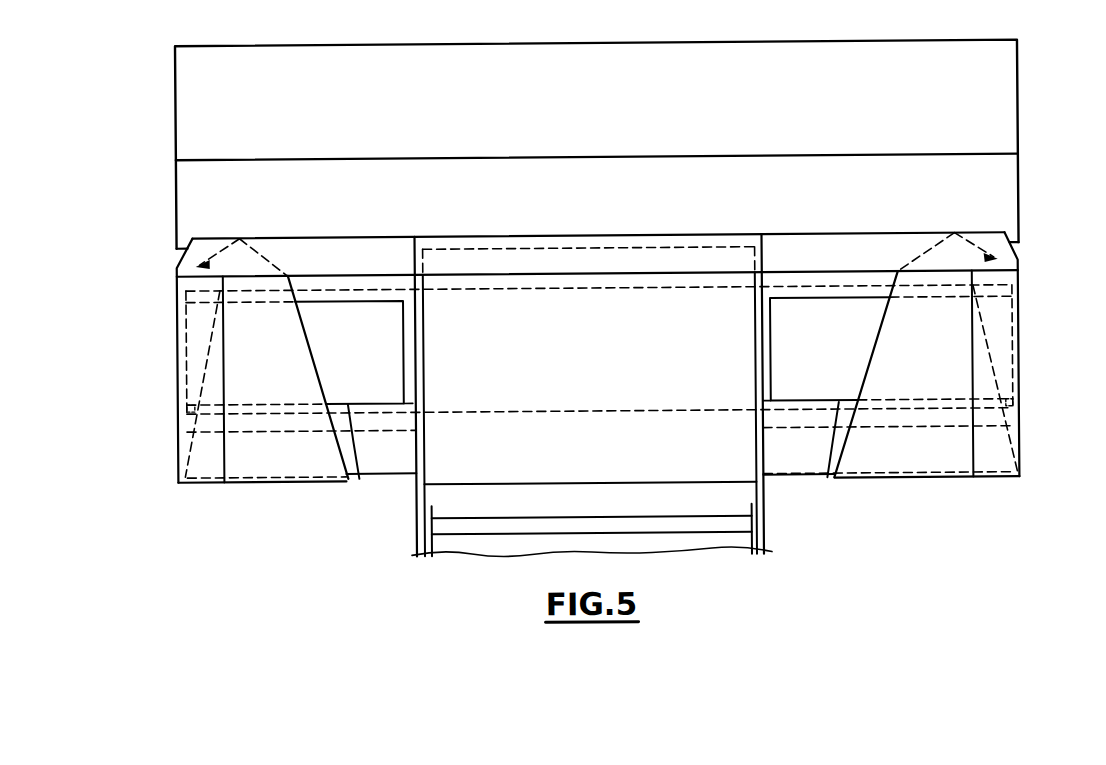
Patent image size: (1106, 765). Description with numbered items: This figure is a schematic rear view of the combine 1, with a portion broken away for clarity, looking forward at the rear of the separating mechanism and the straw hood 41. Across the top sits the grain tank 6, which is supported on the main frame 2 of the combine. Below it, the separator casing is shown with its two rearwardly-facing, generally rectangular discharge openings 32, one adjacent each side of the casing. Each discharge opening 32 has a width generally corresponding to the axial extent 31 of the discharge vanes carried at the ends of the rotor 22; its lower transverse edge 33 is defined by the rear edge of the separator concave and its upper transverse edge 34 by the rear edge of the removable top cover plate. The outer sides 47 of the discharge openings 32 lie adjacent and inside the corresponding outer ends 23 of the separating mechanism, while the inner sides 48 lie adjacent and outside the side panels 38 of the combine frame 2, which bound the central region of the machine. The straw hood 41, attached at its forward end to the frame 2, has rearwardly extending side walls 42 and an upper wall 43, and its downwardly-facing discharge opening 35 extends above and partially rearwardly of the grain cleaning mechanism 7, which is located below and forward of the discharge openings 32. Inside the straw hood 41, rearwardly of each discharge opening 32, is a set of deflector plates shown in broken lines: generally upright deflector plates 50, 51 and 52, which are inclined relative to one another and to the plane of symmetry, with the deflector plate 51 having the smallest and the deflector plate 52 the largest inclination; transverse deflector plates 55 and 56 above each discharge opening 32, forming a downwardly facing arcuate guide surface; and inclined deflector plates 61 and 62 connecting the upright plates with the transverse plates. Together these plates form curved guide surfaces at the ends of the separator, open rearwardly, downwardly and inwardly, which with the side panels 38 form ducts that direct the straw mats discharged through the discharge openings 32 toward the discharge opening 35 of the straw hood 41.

The combine 1 is at (1037, 183).
The main frame 2 is at (415, 492).
The grain tank 6 is at (1019, 118).
The grain cleaning mechanism 7 is at (719, 542).
The rotor 22 is at (516, 411).
The outer ends of the separating mechanism 23 is at (185, 356).
The axial extent of the vanes 31 is at (373, 410).
The discharge openings 32 is at (343, 299).
The lower transverse edge 33 is at (357, 478).
The upper transverse edge 34 is at (317, 299).
The discharge opening of the straw hood 35 is at (307, 480).
The side panels 38 is at (415, 537).
The straw hood 41 is at (235, 484).
The side walls 42 is at (178, 405).
The upper wall 43 is at (272, 236).
The outer sides of the discharge openings 47 is at (185, 338).
The inner sides of the discharge openings 48 is at (403, 361).
The deflector plate 50 is at (178, 388).
The deflector plate 51 is at (193, 318).
The deflector plate 52 is at (275, 458).
The deflector plate 55 is at (347, 236).
The deflector plate 56 is at (378, 266).
The deflector plate 61 is at (203, 252).
The deflector plate 62 is at (245, 258).